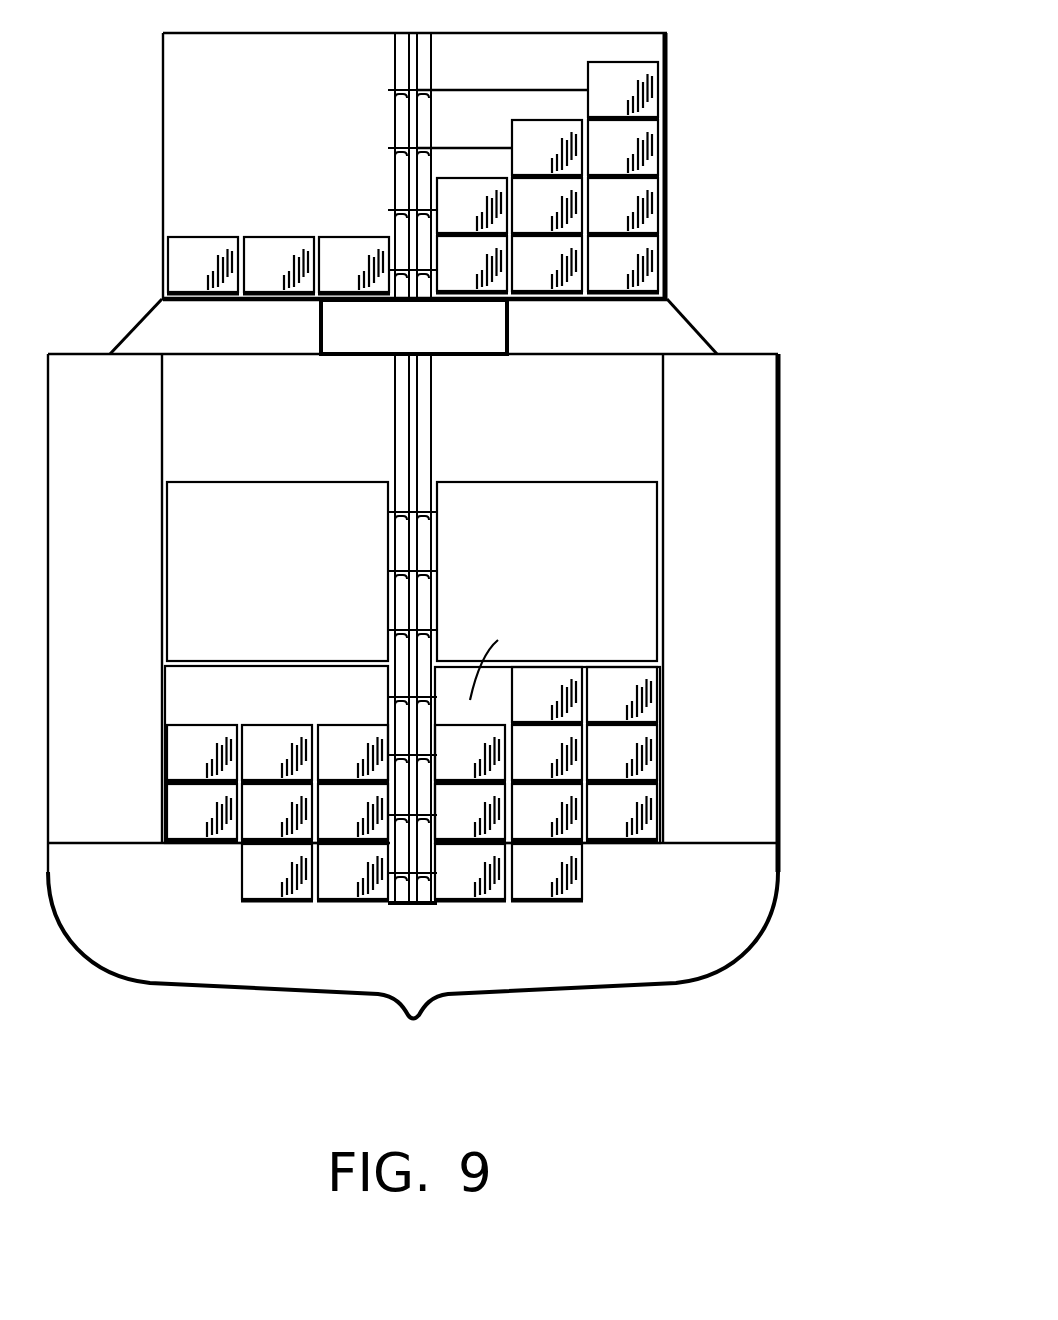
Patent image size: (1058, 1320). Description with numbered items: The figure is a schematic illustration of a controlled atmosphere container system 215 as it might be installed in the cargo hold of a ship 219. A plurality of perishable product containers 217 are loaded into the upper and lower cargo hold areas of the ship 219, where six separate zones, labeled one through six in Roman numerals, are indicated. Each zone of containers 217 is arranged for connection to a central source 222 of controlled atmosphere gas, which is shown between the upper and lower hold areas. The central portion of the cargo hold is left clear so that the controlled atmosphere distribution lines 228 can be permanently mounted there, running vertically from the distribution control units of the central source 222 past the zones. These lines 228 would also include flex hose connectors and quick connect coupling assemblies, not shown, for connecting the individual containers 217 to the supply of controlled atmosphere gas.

The controlled atmosphere container system 215 is at (756, 252).
The perishable product containers 217 is at (620, 218).
The ship 219 is at (780, 510).
The central source 222 is at (414, 327).
The controlled atmosphere distribution lines 228 is at (410, 202).